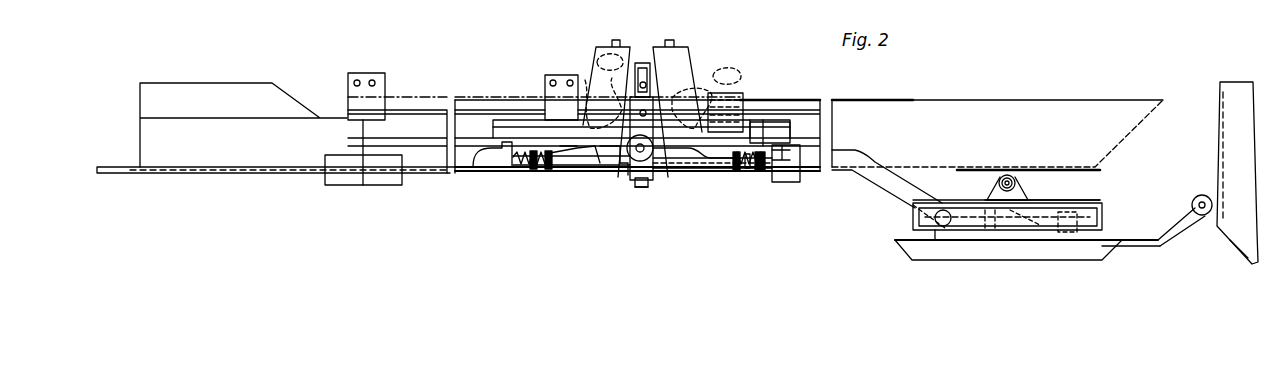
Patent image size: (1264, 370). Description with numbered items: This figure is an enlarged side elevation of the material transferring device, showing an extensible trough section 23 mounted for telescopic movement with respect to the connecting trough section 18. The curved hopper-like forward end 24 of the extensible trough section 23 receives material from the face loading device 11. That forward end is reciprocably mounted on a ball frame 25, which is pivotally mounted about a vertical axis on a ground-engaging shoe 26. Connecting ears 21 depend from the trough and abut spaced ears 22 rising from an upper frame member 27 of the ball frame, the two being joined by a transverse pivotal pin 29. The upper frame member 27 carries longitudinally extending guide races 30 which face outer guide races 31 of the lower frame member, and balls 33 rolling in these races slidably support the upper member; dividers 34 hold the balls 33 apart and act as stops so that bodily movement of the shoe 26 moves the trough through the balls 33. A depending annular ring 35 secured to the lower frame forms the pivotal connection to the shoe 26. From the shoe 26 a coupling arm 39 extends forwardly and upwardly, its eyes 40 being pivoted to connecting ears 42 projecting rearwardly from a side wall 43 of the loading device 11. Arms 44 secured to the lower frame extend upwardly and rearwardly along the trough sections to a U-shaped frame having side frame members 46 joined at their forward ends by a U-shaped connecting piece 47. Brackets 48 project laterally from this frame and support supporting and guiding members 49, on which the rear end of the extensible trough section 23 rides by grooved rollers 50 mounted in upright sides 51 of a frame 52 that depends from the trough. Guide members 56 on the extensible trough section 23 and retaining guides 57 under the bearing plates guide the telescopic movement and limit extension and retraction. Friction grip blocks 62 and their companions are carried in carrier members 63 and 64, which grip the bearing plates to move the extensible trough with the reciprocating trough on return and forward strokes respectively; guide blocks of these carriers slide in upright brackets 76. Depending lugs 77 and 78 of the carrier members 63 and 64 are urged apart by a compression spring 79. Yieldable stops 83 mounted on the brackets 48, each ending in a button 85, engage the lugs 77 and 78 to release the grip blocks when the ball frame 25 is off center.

The face loading device 11 is at (1243, 256).
The connecting trough section 18 is at (220, 103).
The connecting ears 21 is at (990, 183).
The spaced ears 22 is at (1035, 203).
The extensible trough section 23 is at (800, 90).
The curved hopper-like forward end 24 is at (1145, 92).
The ball frame 25 is at (1095, 203).
The ground-engaging shoe 26 is at (900, 248).
The upper frame member 27 is at (1078, 200).
The transverse pivotal pin 29 is at (1012, 174).
The guide races 30 is at (1106, 207).
The outer guide races 31 is at (1100, 225).
The balls 33 is at (938, 230).
The dividers 34 is at (990, 230).
The depending annular ring 35 is at (1025, 230).
The coupling arm 39 is at (1146, 246).
The eyes 40 is at (1198, 196).
The connecting ears 42 is at (1196, 220).
The side wall 43 is at (1218, 142).
The arms 44 is at (893, 188).
The side frame members 46 is at (757, 122).
The U-shaped connecting piece 47 is at (800, 176).
The brackets 48 is at (483, 167).
The supporting and guiding members 49 is at (528, 120).
The grooved rollers 50 is at (660, 165).
The upright sides 51 is at (620, 164).
The frame 52 is at (640, 188).
The guide members 56 is at (392, 62).
The retaining guides 57 is at (752, 62).
The friction grip blocks 62 is at (663, 91).
The carrier member 63 is at (599, 55).
The carrier member 64 is at (698, 58).
The upright brackets 76 is at (643, 63).
The depending lug 77 is at (585, 162).
The depending lug 78 is at (700, 170).
The compression spring 79 is at (627, 176).
The yieldable stops 83 is at (533, 170).
The button 85 is at (549, 168).